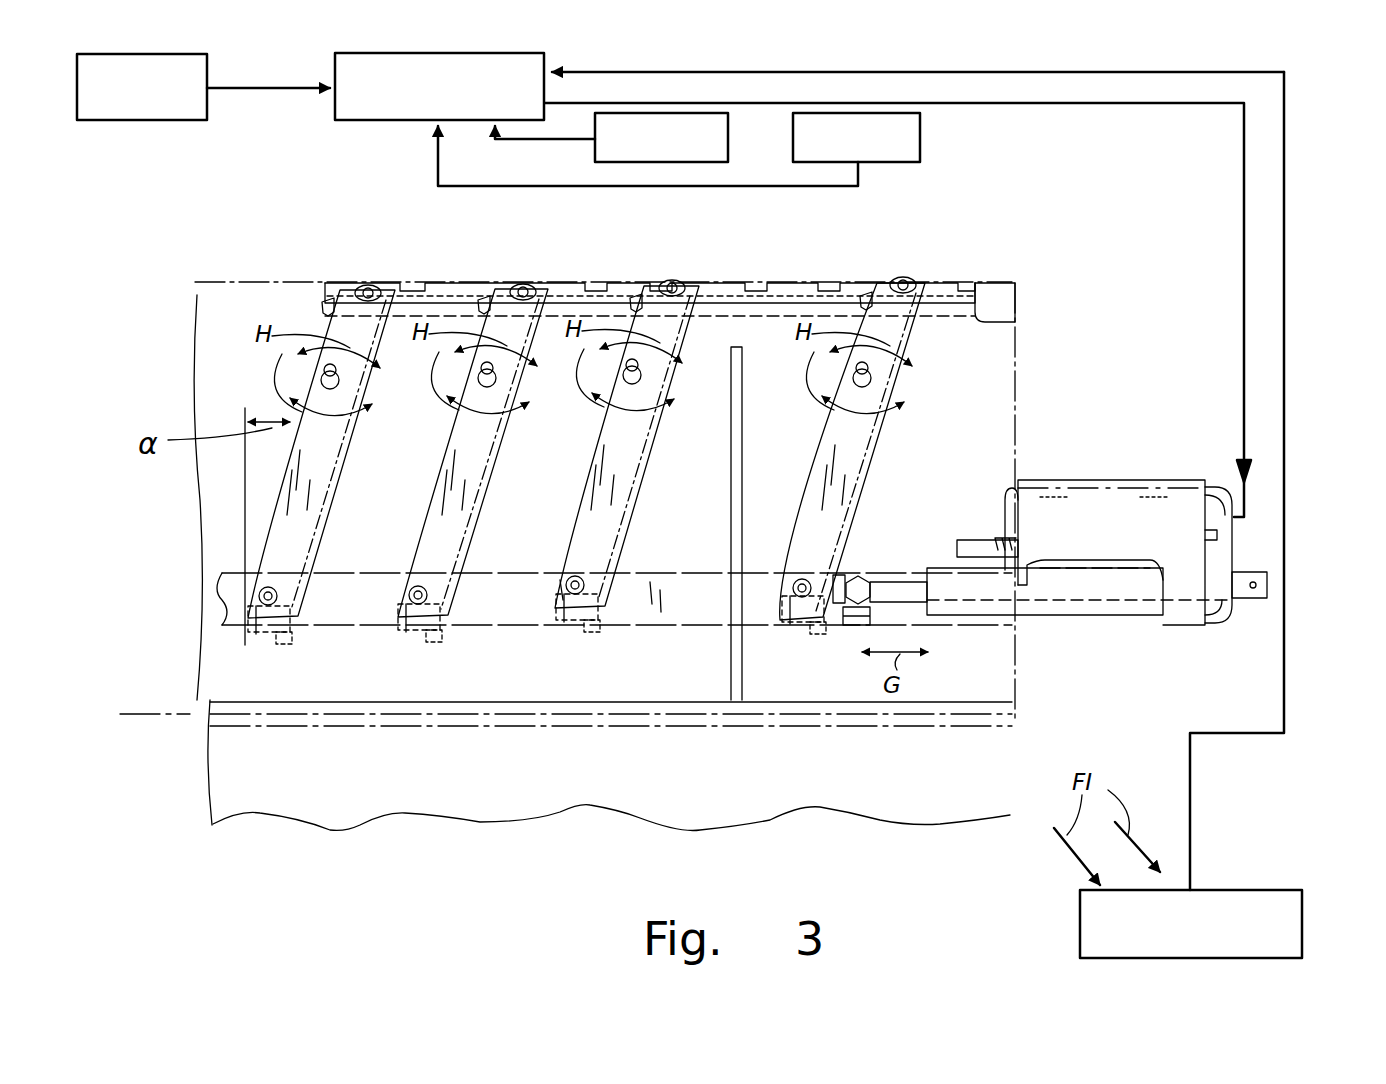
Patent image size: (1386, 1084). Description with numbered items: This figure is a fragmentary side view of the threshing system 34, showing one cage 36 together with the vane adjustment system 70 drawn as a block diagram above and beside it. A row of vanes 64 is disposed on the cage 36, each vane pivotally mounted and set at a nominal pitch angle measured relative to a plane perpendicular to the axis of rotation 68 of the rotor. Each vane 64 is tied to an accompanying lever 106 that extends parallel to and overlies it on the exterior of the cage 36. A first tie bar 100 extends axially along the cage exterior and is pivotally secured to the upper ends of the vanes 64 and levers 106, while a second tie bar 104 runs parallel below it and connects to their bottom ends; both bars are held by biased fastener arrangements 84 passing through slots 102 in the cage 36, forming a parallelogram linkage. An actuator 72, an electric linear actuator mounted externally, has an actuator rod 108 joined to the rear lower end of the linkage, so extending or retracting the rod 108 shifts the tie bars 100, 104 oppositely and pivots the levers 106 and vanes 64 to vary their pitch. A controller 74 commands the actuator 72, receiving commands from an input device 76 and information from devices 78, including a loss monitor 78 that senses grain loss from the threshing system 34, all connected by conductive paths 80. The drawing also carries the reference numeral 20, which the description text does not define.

The louver assembly 20 is at (150, 212).
The threshing system 34 is at (212, 843).
The threshing cage 36 is at (1020, 296).
The vane 64 is at (285, 642).
The axis of rotation 68 is at (160, 716).
The system 70 is at (1332, 107).
The actuator 72 is at (1118, 480).
The controller 74 is at (375, 122).
The input device 76 is at (172, 122).
The device 78 is at (728, 132).
The conductive paths 80 is at (282, 90).
The biased fastener arrangement 84 is at (370, 286).
The first tie bar 100 is at (980, 318).
The slot 102 is at (340, 300).
The second tie bar 104 is at (685, 626).
The lever 106 is at (430, 492).
The actuator rod 108 is at (905, 576).